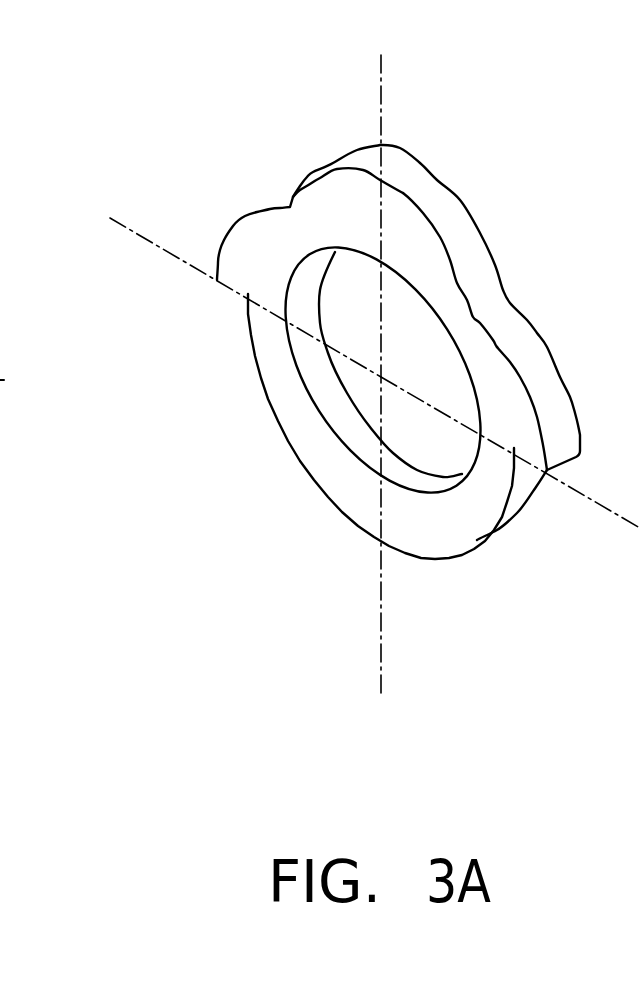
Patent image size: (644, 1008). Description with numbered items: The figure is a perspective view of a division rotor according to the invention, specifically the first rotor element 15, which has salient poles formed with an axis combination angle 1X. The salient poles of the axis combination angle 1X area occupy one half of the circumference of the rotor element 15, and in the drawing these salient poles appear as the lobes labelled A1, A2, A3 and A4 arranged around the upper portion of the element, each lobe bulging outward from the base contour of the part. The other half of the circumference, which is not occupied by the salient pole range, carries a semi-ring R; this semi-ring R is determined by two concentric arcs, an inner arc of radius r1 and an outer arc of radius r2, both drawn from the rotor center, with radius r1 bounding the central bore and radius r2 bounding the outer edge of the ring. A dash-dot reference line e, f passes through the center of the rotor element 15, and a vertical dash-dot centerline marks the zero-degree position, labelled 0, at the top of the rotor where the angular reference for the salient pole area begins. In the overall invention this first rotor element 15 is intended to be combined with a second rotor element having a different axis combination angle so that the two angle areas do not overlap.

The axis combination angle 1X is at (369, 309).
The first rotor element 15 is at (206, 161).
The first cam lobe A1 is at (224, 238).
The second cam lobe A2 is at (307, 175).
The third cam lobe A3 is at (433, 230).
The fourth cam lobe A4 is at (520, 377).
The semi-ring R is at (330, 497).
The radius r1 is at (381, 377).
The radius r2 is at (471, 529).
The reference axis e is at (245, 297).
The reference axis f is at (510, 452).
The zero degree reference position 0 is at (383, 177).